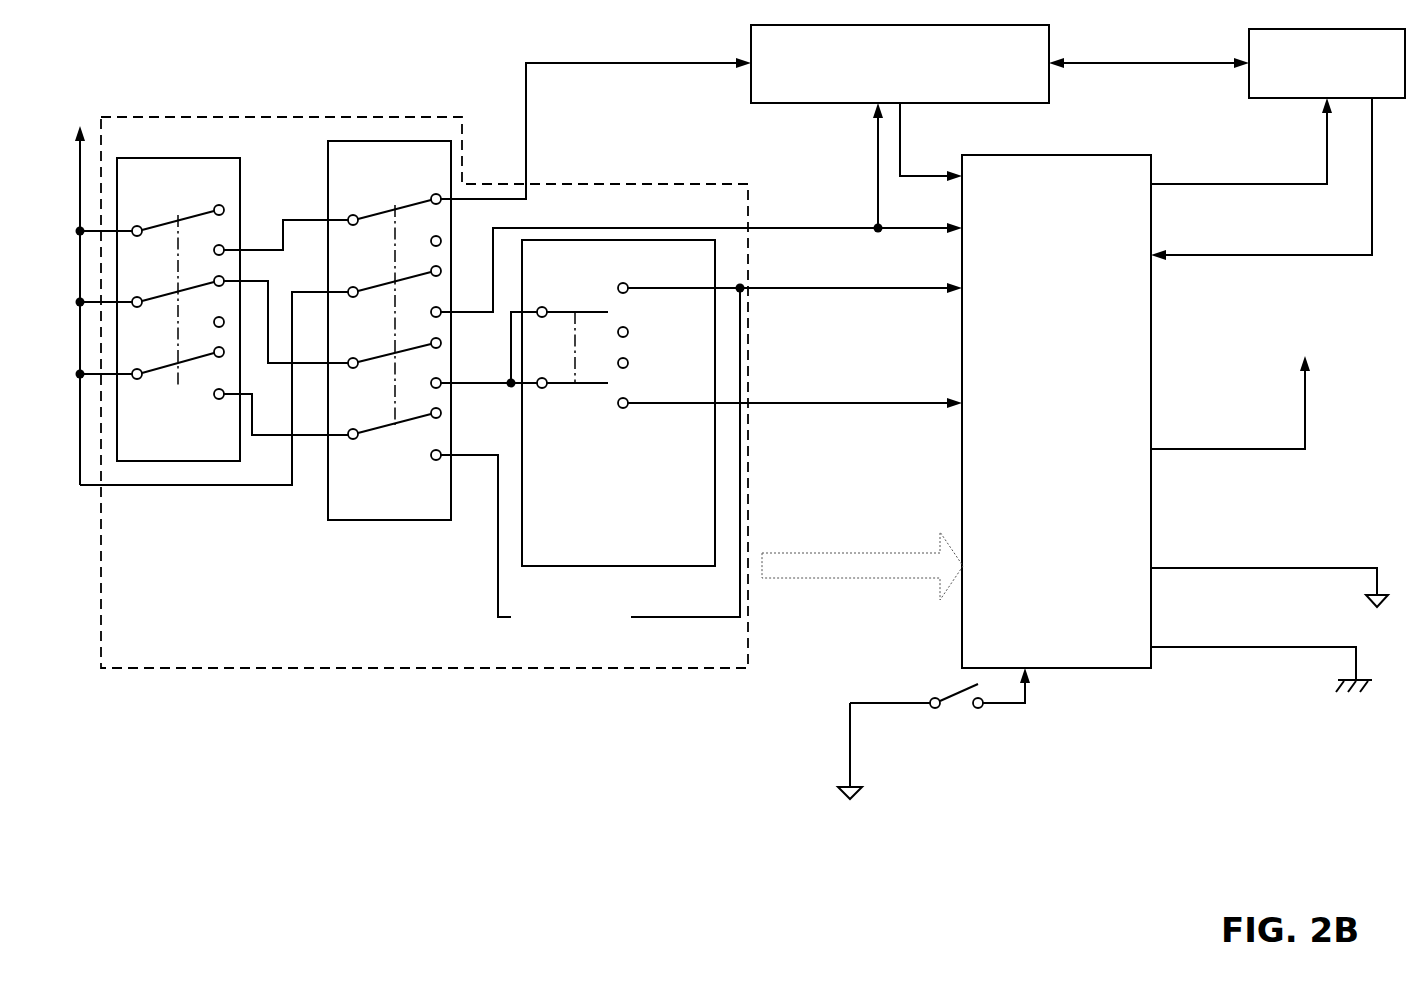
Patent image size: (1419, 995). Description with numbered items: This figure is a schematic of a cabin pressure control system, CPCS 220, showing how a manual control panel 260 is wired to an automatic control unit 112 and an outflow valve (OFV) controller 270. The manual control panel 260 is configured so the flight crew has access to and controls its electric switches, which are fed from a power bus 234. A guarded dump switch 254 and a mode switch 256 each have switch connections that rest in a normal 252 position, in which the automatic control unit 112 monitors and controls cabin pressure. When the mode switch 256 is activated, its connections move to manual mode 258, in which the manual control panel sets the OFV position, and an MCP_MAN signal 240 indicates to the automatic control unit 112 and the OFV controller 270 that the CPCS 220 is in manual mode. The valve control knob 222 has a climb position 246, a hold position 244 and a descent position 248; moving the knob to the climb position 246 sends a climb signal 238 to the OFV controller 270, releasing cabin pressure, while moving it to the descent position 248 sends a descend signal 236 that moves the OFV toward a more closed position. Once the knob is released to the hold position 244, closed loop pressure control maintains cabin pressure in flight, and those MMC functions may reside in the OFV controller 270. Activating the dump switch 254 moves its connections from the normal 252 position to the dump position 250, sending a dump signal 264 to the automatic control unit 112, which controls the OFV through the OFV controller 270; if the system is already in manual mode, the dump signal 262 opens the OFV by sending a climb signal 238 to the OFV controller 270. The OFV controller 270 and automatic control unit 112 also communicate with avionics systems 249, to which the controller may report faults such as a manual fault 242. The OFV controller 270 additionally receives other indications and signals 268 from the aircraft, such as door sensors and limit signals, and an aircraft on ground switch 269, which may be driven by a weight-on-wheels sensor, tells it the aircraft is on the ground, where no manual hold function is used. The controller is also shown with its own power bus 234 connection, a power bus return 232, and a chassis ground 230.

The CPCS 220 is at (376, 808).
The valve control knob 222 is at (603, 561).
The chassis ground 230 is at (1240, 674).
The power bus return 232 is at (1235, 592).
The power bus 234 is at (1235, 474).
The descend signal 236 is at (845, 426).
The climb signal 238 is at (833, 314).
The MCP_MAN signal 240 is at (797, 250).
The manual fault 242 is at (1217, 208).
The hold position 244 is at (657, 365).
The climb position 246 is at (560, 297).
The descent position 248 is at (560, 461).
The avionics systems 249 is at (1312, 90).
The dump position 250 is at (155, 456).
The normal position 252 is at (394, 201).
The dump switch 254 is at (208, 148).
The mode switch 256 is at (405, 132).
The manual mode 258 is at (364, 513).
The manual control panel 260 is at (275, 635).
The dump signal 262 is at (555, 644).
The dump signal 264 is at (623, 133).
The other indications and signals 268 is at (947, 577).
The aircraft on ground switch 269 is at (983, 773).
The OFV controller 270 is at (1037, 536).
The automatic control unit 112 is at (885, 87).